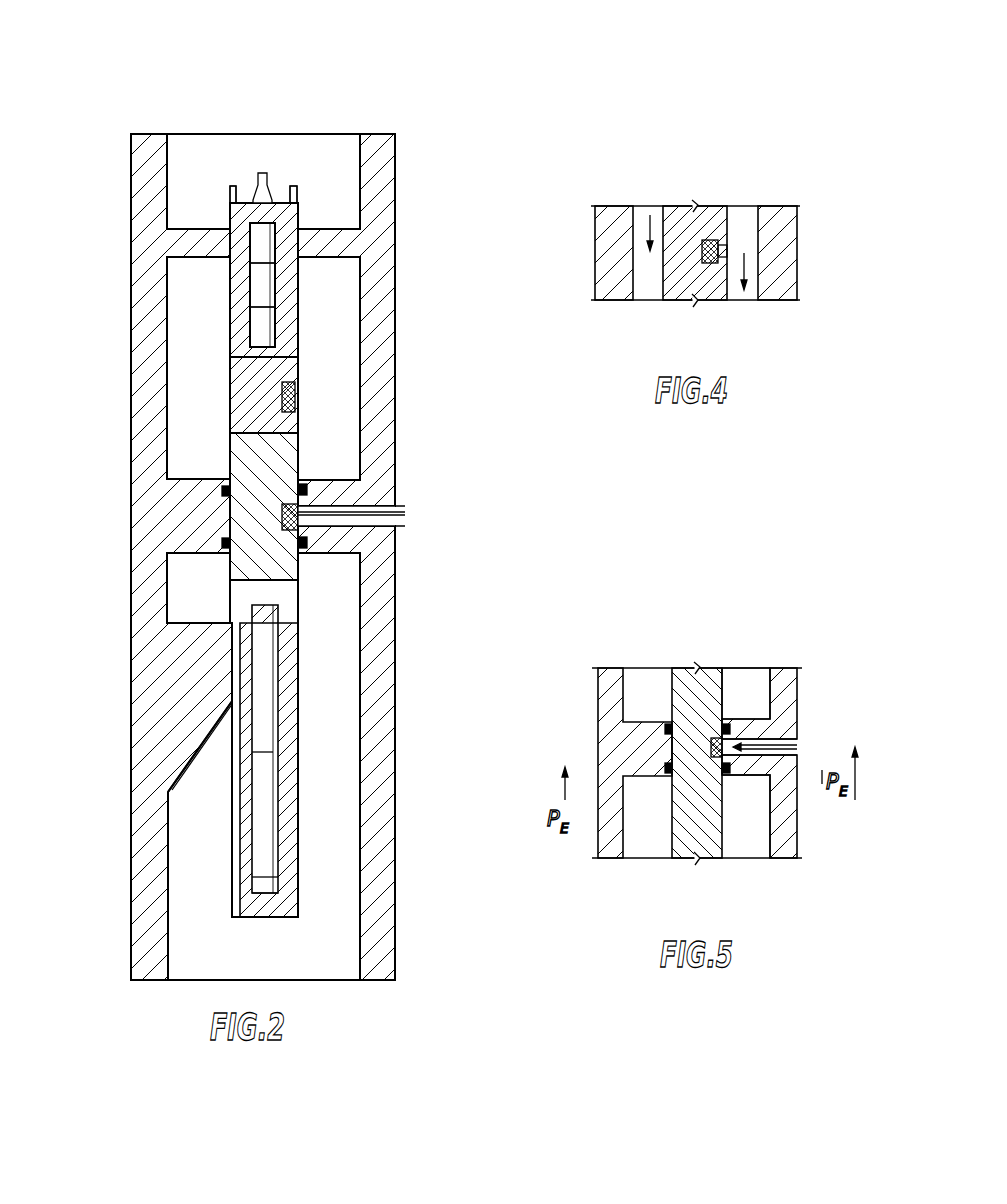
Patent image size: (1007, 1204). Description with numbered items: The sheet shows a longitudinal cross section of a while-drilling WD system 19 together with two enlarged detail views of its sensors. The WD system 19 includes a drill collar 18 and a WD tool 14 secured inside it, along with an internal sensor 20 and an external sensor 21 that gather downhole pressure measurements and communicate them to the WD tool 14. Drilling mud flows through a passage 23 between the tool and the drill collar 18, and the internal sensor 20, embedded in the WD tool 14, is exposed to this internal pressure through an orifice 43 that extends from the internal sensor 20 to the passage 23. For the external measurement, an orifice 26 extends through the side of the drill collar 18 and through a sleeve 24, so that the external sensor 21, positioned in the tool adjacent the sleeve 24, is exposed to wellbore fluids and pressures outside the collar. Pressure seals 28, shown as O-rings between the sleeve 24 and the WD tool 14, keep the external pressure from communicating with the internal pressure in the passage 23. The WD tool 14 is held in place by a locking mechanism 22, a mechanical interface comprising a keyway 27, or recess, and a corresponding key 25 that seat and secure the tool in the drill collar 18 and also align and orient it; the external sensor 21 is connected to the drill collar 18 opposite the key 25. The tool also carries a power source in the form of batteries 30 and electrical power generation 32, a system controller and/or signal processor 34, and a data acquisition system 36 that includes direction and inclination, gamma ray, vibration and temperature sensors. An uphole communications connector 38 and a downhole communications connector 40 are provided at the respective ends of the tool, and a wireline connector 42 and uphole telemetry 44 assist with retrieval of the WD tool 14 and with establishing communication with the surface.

In FIG. 2, the WD tool 14 is at (290, 220).
In FIG. 4, the WD tool 14 is at (728, 235).
In FIG. 5, the WD tool 14 is at (690, 708).
In FIG. 2, the drill collar 18 is at (385, 134).
In FIG. 4, the drill collar 18 is at (780, 221).
In FIG. 5, the drill collar 18 is at (610, 690).
In FIG. 2, the WD system 19 is at (122, 98).
In FIG. 4, the WD system 19 is at (789, 178).
In FIG. 5, the WD system 19 is at (794, 645).
In FIG. 2, the internal sensor 20 is at (290, 393).
In FIG. 4, the internal sensor 20 is at (700, 256).
In FIG. 2, the external sensor 21 is at (298, 510).
In FIG. 5, the external sensor 21 is at (706, 755).
In FIG. 2, the locking mechanism 22 is at (77, 792).
In FIG. 2, the passage 23 is at (165, 320).
In FIG. 4, the passage 23 is at (755, 268).
In FIG. 5, the passage 23 is at (768, 676).
In FIG. 2, the sleeve 24 is at (198, 548).
In FIG. 5, the sleeve 24 is at (747, 770).
In FIG. 2, the key 25 is at (235, 637).
In FIG. 2, the orifice 26 is at (373, 523).
In FIG. 5, the orifice 26 is at (797, 748).
In FIG. 2, the keyway 27 is at (227, 779).
In FIG. 2, the pressure seals 28 is at (222, 491).
In FIG. 5, the pressure seals 28 is at (728, 728).
In FIG. 2, the batteries 30 is at (265, 763).
In FIG. 2, the electrical power generation 32 is at (260, 247).
In FIG. 2, the system controller and/or signal processor 34 is at (260, 282).
In FIG. 2, the data acquisition system 36 is at (263, 337).
In FIG. 2, the uphole communications connector 38 is at (258, 180).
In FIG. 2, the downhole communications connector 40 is at (253, 885).
In FIG. 2, the wireline connector 42 is at (232, 205).
In FIG. 4, the orifice 43 is at (728, 251).
In FIG. 2, the uphole telemetry 44 is at (232, 198).